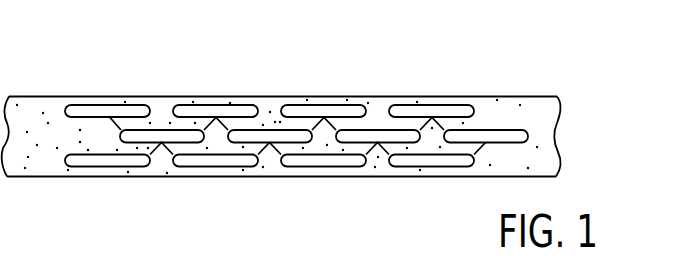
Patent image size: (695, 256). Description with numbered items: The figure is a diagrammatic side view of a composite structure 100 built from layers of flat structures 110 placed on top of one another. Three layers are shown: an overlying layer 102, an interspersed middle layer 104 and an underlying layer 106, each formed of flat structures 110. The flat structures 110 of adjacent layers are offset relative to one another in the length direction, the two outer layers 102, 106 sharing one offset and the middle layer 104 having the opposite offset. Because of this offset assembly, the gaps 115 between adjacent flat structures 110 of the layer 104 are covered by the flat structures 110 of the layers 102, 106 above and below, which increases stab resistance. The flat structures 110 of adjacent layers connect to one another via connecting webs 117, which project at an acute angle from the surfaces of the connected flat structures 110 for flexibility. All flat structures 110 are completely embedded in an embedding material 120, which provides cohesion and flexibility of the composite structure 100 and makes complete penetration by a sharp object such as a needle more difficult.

The composite structure 100 is at (333, 113).
The layer 102 is at (320, 74).
The layer 104 is at (378, 172).
The layer 106 is at (499, 160).
The flat structure 110 is at (206, 105).
The gap 115 is at (158, 110).
The connecting web 117 is at (113, 122).
The embedding material 120 is at (34, 128).